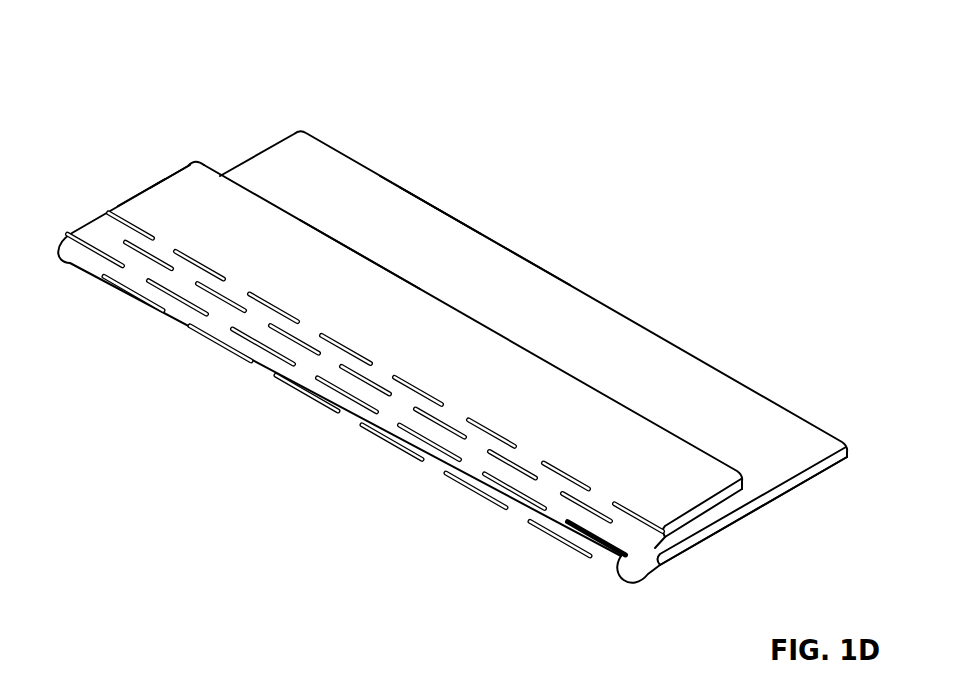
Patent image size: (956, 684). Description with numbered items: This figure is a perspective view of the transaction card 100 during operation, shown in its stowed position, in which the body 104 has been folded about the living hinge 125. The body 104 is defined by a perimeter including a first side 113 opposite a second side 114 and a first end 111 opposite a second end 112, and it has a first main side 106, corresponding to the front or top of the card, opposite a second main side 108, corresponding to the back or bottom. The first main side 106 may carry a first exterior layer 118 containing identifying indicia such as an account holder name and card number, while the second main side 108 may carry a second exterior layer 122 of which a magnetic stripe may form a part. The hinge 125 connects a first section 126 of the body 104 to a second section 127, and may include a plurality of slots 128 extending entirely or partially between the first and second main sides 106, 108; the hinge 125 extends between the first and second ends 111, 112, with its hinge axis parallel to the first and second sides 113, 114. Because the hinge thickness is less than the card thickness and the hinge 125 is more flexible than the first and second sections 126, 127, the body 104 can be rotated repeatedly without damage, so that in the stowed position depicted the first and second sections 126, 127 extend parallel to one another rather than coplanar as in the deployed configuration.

The transaction card 100 is at (97, 35).
The body 104 is at (533, 367).
The first main side 106 is at (739, 389).
The second main side 108 is at (662, 503).
The first end 111 is at (400, 336).
The second end 112 is at (763, 537).
The first side 113 is at (434, 186).
The second side 114 is at (174, 152).
The first exterior layer 118 is at (477, 278).
The second exterior layer 122 is at (410, 322).
The living hinge 125 is at (519, 515).
The first section 126 is at (531, 266).
The second section 127 is at (144, 170).
The slots 128 is at (203, 263).